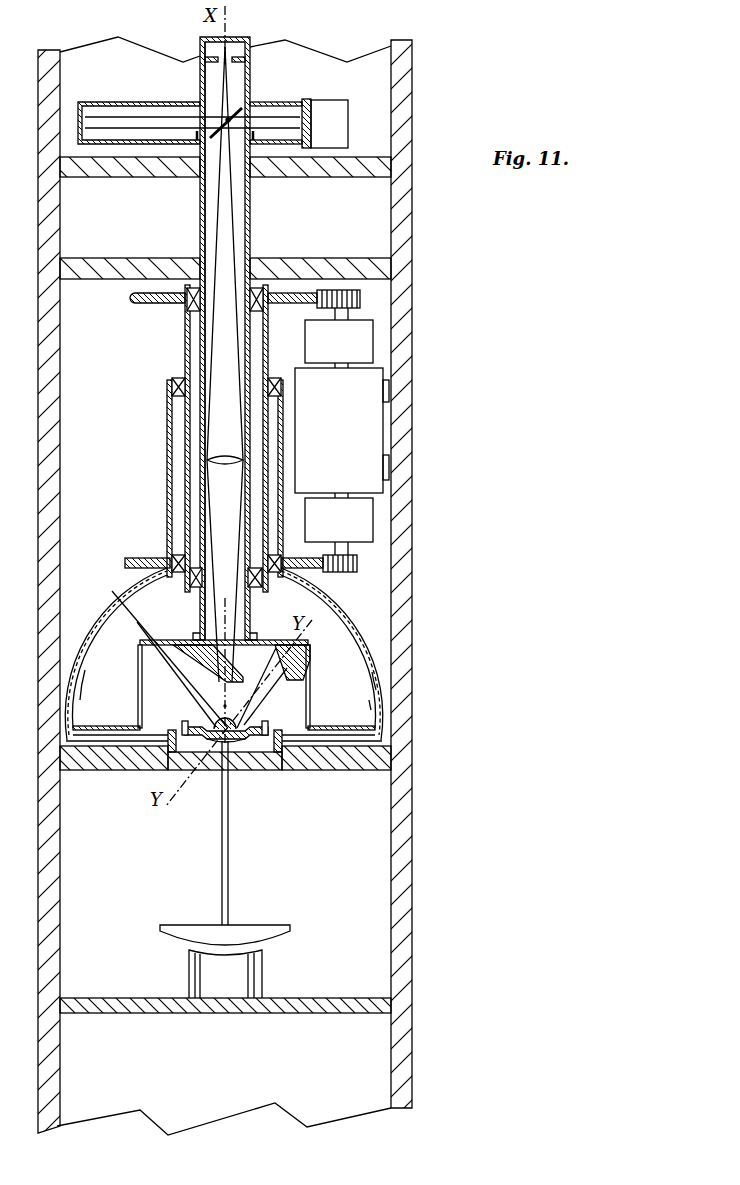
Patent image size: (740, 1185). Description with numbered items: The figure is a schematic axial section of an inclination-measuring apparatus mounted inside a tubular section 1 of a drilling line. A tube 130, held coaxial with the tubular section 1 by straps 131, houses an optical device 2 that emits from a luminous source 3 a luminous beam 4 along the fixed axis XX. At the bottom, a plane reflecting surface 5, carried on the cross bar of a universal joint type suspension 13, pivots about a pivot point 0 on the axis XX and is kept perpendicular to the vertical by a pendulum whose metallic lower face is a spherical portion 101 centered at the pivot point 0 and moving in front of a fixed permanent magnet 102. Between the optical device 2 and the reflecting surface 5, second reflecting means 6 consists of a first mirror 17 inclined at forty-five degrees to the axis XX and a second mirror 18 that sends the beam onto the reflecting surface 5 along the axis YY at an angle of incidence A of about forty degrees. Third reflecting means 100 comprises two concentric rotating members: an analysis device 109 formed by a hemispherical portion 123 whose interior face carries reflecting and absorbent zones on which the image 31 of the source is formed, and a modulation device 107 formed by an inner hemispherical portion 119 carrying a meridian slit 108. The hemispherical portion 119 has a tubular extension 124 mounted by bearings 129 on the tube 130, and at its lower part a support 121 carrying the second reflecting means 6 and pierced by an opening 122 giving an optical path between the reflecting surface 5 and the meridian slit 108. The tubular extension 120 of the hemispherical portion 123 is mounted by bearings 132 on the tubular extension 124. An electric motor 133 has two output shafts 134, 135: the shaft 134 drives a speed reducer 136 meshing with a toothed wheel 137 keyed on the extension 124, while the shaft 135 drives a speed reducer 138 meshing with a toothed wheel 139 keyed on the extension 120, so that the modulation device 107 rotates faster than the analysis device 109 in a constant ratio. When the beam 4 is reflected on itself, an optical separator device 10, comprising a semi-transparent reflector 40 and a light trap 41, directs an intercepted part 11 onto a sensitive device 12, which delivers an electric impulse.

The tubular section 1 is at (410, 560).
The optical device 2 is at (252, 213).
The luminous source 3 is at (228, 46).
The image of the luminous source 31 is at (191, 649).
The luminous beam 4 is at (223, 278).
The plane reflecting surface 5 is at (243, 726).
The second reflecting means 6 is at (276, 639).
The optical separator device 10 is at (234, 126).
The intercepted part of the luminous beam 11 is at (285, 125).
The sensitive device 12 is at (336, 118).
The universal joint type suspension 13 is at (181, 727).
The first mirror 17 is at (217, 656).
The second mirror 18 is at (288, 661).
The semi-transparent reflector 40 is at (202, 116).
The light trap 41 is at (127, 122).
The pivot point 0 is at (232, 737).
The angle of incidence A is at (238, 692).
The third reflecting means 100 is at (372, 628).
The spherical portion 101 is at (253, 930).
The fixed permanent magnet 102 is at (260, 983).
The modulation device 107 is at (345, 631).
The meridian slit 108 is at (98, 638).
The analysis device 109 is at (374, 663).
The hemispherical portion 119 is at (358, 644).
The tubular extension 120 is at (168, 500).
The support 121 is at (312, 707).
The opening 122 is at (140, 705).
The hemispherical portion 123 is at (378, 695).
The tubular extension 124 is at (185, 472).
The bearings 129 is at (187, 309).
The tube 130 is at (199, 203).
The straps 131 is at (130, 177).
The bearings 132 is at (172, 387).
The electric motor 133 is at (352, 434).
The output shaft 134 is at (341, 366).
The output shaft 135 is at (342, 494).
The speed reducer 136 is at (345, 351).
The toothed wheel 137 is at (262, 312).
The speed reducer 138 is at (347, 532).
The toothed wheel 139 is at (312, 569).